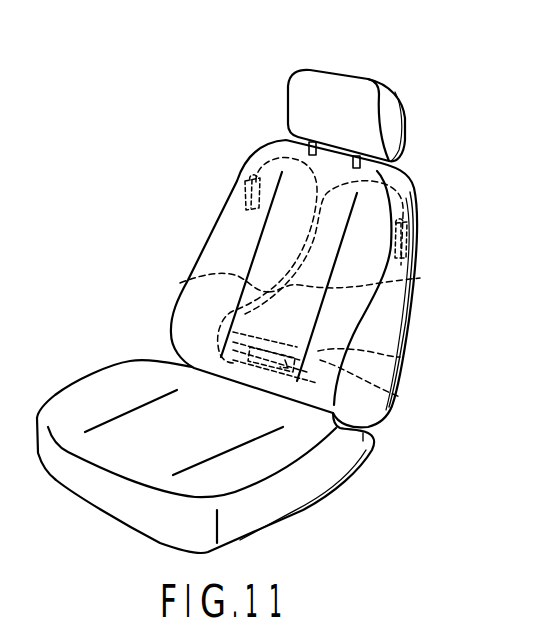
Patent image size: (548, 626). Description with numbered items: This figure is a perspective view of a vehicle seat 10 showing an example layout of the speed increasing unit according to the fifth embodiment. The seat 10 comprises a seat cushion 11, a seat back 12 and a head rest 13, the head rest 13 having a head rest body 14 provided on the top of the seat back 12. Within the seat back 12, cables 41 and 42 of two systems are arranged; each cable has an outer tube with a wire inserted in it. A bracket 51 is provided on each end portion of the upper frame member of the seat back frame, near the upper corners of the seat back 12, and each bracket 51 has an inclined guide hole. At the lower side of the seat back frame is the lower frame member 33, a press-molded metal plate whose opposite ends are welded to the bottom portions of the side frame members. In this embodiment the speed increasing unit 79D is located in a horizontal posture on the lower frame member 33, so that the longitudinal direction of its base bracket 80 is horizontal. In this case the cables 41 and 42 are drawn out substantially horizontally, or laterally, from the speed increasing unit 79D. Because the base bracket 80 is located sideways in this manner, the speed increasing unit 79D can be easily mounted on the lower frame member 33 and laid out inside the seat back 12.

The vehicle seat 10 is at (226, 128).
The seat cushion 11 is at (142, 418).
The seat back 12 is at (273, 260).
The head rest 13 is at (286, 74).
The head rest body 14 is at (360, 97).
The bracket 51 is at (237, 183).
The cable 41 is at (182, 282).
The cable 42 is at (420, 278).
The speed increasing unit 79D is at (296, 336).
The lower frame member 33 is at (400, 357).
The base bracket 80 is at (400, 397).